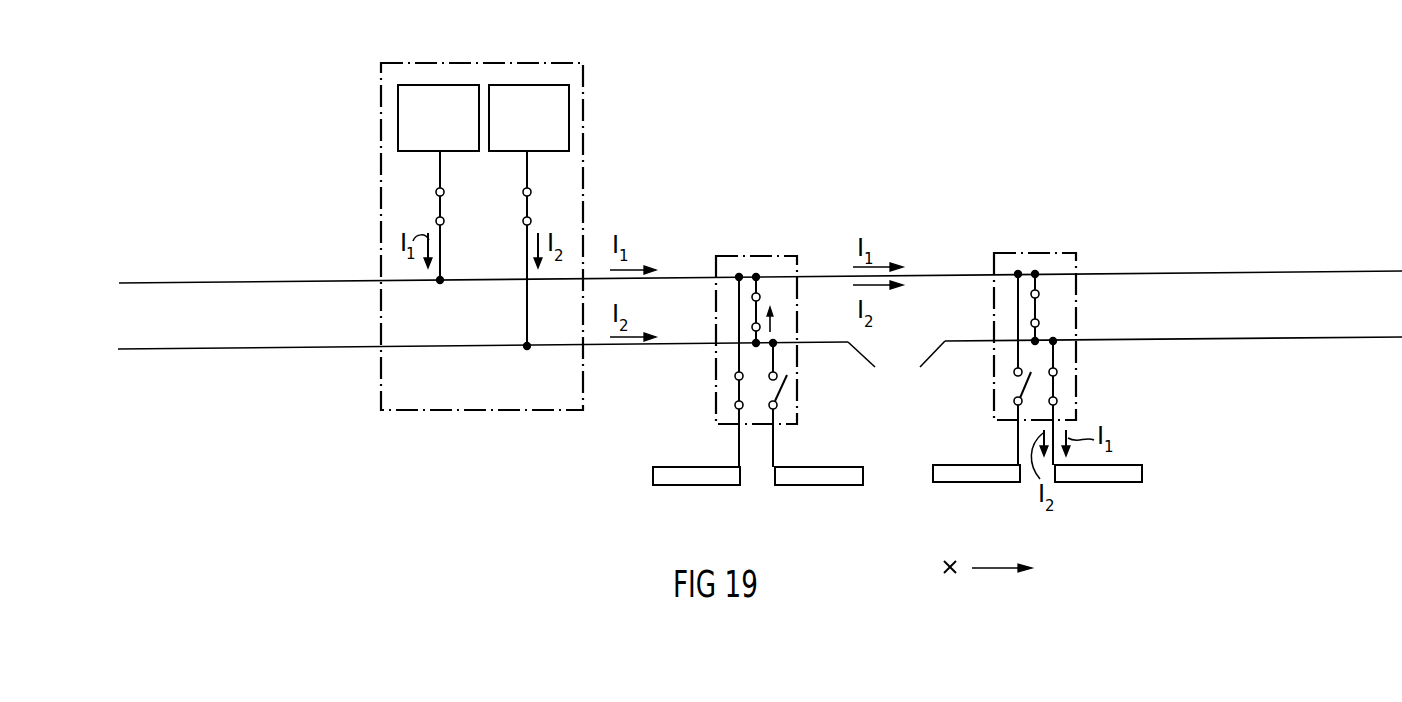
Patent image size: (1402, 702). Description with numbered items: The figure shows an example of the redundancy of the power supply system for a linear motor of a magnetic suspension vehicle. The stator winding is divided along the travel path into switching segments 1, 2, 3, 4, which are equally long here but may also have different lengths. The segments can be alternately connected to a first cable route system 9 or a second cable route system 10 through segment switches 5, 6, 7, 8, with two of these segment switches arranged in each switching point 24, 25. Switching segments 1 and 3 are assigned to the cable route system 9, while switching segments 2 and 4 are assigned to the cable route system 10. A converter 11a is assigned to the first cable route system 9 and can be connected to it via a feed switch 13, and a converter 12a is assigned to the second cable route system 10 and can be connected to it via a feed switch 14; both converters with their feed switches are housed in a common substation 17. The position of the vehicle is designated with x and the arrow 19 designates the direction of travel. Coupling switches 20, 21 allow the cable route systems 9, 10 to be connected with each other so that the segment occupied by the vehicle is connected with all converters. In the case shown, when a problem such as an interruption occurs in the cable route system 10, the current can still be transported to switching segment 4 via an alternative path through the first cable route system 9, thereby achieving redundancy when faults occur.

The switching segment 1 is at (705, 481).
The switching segment 2 is at (803, 481).
The switching segment 3 is at (968, 478).
The switching segment 4 is at (1088, 478).
The segment switch 5 is at (738, 388).
The segment switch 6 is at (783, 390).
The segment switch 7 is at (1016, 388).
The segment switch 8 is at (1057, 386).
The first cable route system 9 is at (1327, 270).
The second cable route system 10 is at (1332, 338).
The converter 11a is at (398, 118).
The converter 12a is at (569, 113).
The feed switch 13 is at (438, 208).
The feed switch 14 is at (530, 207).
The substation 17 is at (462, 62).
The arrow 19 is at (972, 568).
The coupling switch 20 is at (760, 300).
The coupling switch 21 is at (1038, 308).
The switching point 24 is at (731, 255).
The switching point 25 is at (1006, 251).